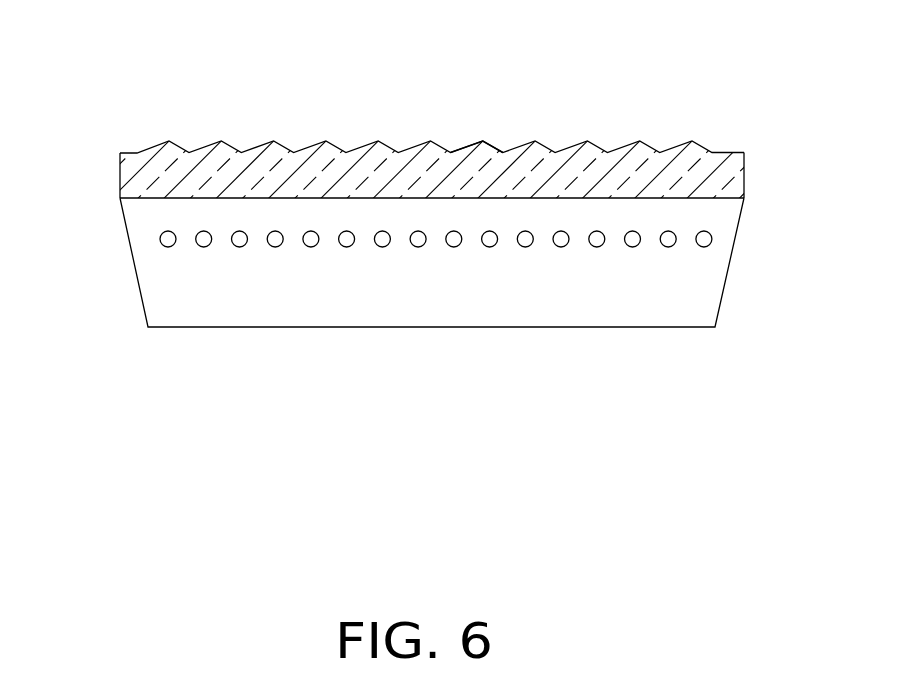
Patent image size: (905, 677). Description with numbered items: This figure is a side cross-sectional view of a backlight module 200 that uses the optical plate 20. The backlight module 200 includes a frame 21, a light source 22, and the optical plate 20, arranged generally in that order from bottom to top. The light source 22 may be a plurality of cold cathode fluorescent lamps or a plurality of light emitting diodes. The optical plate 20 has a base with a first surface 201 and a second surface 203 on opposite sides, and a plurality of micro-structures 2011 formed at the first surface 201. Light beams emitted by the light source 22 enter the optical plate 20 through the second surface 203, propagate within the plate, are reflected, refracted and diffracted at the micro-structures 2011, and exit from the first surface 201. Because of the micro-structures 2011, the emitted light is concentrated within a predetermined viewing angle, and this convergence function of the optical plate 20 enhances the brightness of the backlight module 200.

The backlight module 200 is at (573, 82).
The optical plate 20 is at (133, 180).
The micro-structures 2011 is at (163, 148).
The first surface 201 is at (483, 139).
The second surface 203 is at (154, 201).
The frame 21 is at (142, 295).
The light source 22 is at (162, 246).